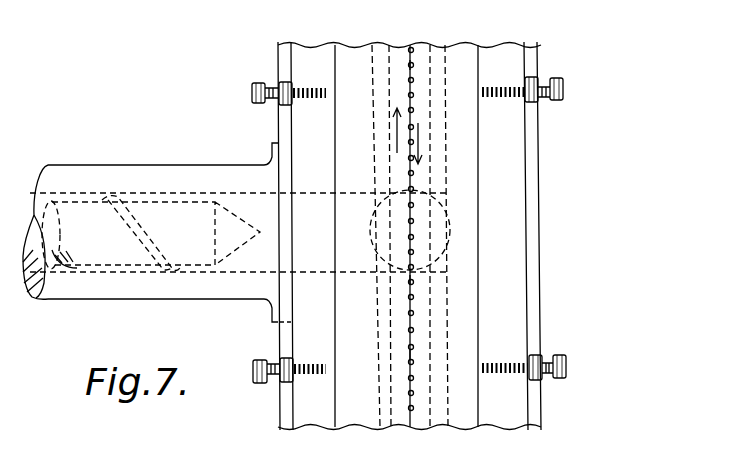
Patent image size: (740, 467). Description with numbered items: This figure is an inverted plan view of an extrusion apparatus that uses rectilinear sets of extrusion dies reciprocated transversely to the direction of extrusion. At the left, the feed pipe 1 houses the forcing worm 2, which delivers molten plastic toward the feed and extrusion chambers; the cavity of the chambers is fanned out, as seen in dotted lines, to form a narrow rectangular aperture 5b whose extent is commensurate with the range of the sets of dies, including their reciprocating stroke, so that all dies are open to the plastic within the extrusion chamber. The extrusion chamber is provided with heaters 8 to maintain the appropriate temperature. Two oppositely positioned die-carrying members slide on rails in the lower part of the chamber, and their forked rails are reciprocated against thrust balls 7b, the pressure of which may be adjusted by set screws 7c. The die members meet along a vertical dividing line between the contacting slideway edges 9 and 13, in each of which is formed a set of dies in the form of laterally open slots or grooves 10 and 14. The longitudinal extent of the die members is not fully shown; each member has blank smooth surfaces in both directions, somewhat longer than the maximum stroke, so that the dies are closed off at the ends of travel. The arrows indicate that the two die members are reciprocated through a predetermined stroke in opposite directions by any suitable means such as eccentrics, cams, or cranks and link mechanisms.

The feed pipe 1 is at (173, 288).
The forcing worm 2 is at (110, 250).
The narrow rectangular aperture 5b is at (430, 77).
The thrust balls 7b is at (328, 88).
The set screws 7c is at (545, 82).
The heaters 8 is at (533, 205).
The slideway edge 9 is at (413, 322).
The dies (laterally open slots or grooves) 10 is at (411, 52).
The slideway edge 13 is at (412, 355).
The dies (laterally open slots or grooves) 14 is at (407, 63).